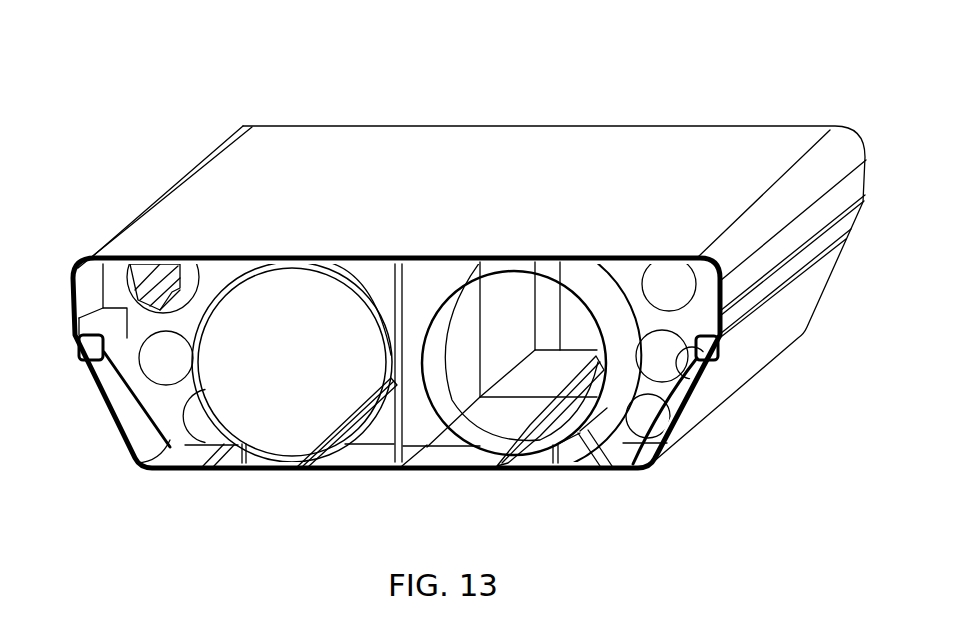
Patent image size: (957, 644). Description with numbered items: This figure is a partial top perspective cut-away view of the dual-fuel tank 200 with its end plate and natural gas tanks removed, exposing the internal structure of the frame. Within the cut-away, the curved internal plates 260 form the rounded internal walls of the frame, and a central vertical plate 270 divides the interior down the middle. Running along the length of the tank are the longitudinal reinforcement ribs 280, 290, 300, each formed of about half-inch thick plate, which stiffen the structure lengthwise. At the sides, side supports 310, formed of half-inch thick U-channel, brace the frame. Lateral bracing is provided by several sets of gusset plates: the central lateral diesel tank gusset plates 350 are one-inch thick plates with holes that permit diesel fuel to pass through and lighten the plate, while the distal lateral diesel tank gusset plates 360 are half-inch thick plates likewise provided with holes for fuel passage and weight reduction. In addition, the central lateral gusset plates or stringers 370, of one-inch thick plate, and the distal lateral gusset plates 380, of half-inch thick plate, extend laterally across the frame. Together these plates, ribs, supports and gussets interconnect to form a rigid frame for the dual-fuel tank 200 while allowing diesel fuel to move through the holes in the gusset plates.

The housing 200 is at (757, 415).
The curved internal plates 260 is at (606, 305).
The central vertical plate 270 is at (407, 450).
The longitudinal reinforcement ribs 280 is at (272, 258).
The longitudinal reinforcement ribs 290 is at (208, 470).
The longitudinal reinforcement ribs 300 is at (243, 470).
The side supports 310 is at (103, 362).
The central lateral diesel tank gusset plates 350 is at (167, 257).
The distal lateral diesel tank gusset plates 360 is at (147, 470).
The central lateral gusset plates or stringers 370 is at (432, 258).
The distal lateral gusset plates 380 is at (352, 452).